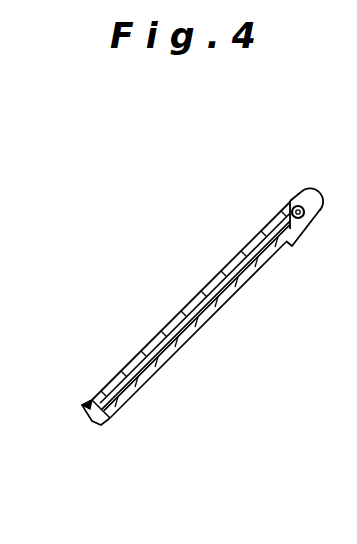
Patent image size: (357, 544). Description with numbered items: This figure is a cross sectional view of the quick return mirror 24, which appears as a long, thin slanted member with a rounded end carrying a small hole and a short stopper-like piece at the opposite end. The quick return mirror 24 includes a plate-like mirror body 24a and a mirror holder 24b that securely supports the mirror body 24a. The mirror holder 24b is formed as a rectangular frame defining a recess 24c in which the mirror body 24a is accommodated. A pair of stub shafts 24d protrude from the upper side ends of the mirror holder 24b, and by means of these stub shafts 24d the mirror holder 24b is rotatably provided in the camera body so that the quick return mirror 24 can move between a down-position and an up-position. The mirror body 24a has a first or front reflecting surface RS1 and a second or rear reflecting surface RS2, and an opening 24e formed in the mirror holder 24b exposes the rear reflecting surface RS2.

The quick return mirror 24 is at (150, 396).
The mirror body 24a is at (241, 256).
The mirror holder 24b is at (291, 249).
The recess 24c is at (92, 401).
The stub shaft 24d is at (301, 205).
The opening 24e is at (218, 307).
The front reflecting surface RS1 is at (175, 316).
The rear reflecting surface RS2 is at (192, 333).